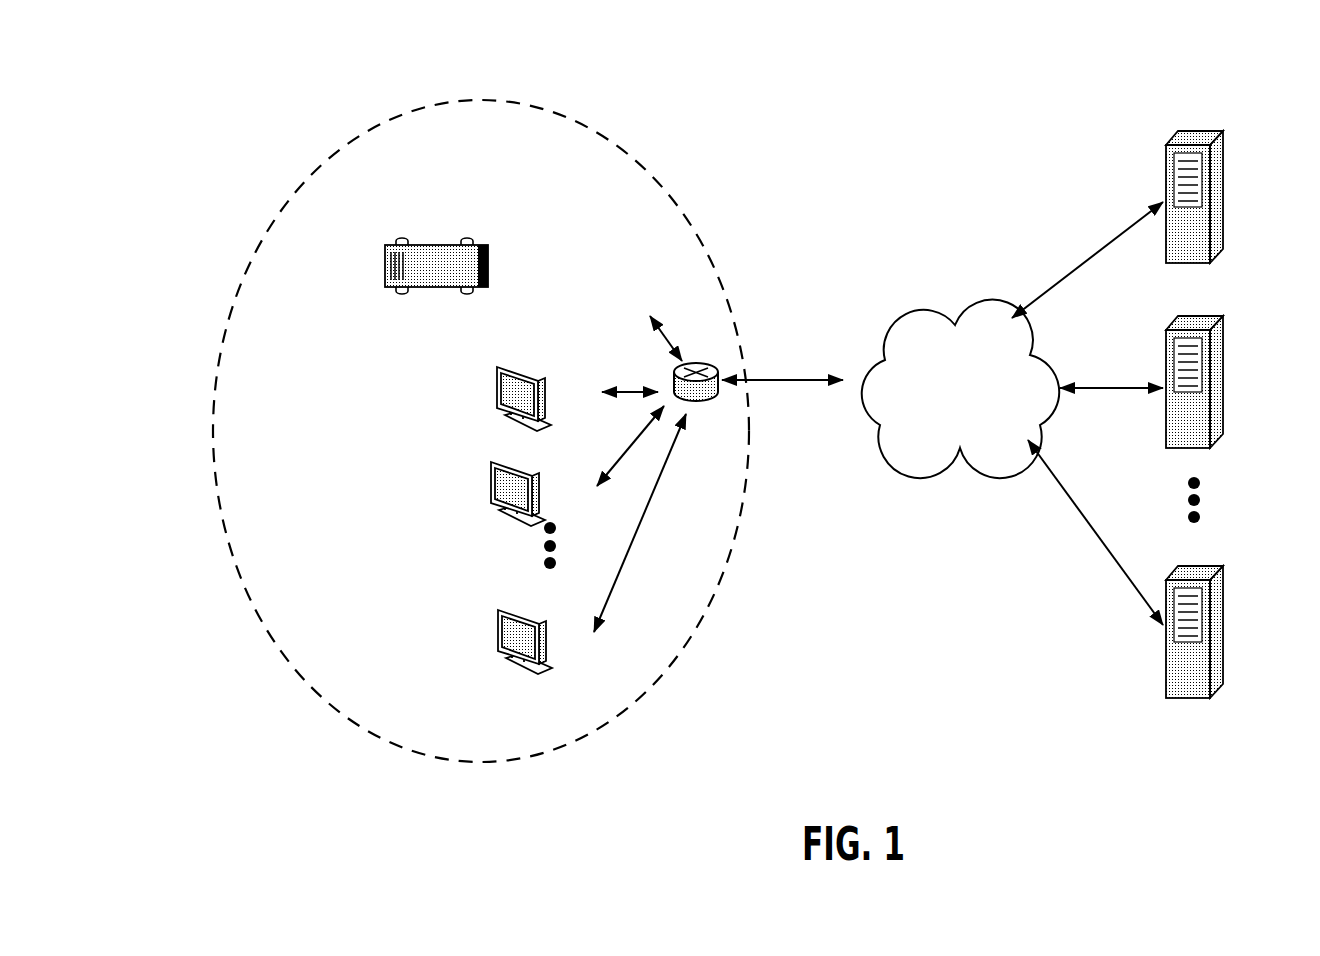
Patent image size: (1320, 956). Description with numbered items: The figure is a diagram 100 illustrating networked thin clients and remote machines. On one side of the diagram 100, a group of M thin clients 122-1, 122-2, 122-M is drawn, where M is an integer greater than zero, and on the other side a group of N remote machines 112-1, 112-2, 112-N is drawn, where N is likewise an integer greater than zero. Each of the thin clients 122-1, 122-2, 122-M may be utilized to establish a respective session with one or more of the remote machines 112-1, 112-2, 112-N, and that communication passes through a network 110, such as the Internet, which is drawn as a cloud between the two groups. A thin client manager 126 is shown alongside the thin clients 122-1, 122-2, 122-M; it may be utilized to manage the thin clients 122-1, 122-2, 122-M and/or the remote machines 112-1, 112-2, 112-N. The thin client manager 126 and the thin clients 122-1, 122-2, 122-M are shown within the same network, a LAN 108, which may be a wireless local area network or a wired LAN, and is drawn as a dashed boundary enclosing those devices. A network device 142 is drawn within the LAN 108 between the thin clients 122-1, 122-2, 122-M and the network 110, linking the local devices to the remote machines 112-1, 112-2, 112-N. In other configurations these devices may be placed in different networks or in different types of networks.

The diagram 100 is at (175, 82).
The LAN 108 is at (632, 157).
The network 110 is at (938, 312).
The remote machine 112-1 is at (1223, 167).
The remote machine 112-2 is at (1223, 370).
The remote machine 112-N is at (1223, 630).
The thin client 122-1 is at (534, 382).
The thin client 122-2 is at (530, 479).
The thin client 122-M is at (546, 601).
The thin client manager 126 is at (488, 266).
The router 142 is at (694, 365).